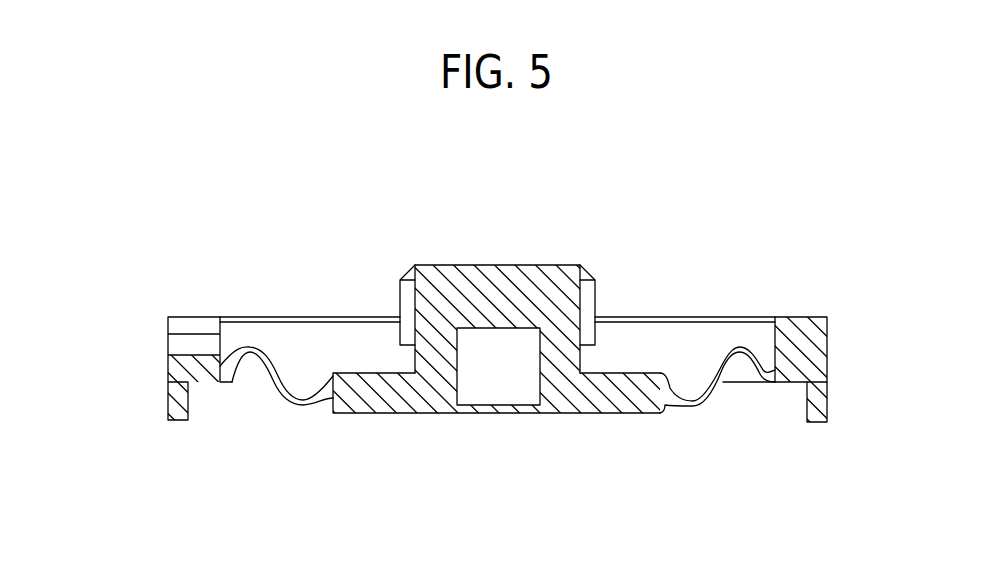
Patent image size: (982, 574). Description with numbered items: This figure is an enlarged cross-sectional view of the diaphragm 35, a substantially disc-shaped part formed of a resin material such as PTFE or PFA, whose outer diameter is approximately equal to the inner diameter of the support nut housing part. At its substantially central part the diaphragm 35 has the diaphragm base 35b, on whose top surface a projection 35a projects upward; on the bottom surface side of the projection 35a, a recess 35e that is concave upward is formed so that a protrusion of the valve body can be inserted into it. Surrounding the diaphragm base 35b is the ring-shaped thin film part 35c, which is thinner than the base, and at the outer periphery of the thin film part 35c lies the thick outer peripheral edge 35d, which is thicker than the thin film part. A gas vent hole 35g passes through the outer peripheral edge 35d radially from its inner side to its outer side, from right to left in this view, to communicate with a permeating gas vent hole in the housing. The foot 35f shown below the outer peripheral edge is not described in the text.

The diaphragm 35 is at (810, 312).
The projection 35a is at (592, 298).
The diaphragm base 35b is at (573, 403).
The thin film part 35c is at (697, 405).
The outer peripheral edge 35d is at (817, 352).
The recess 35e is at (495, 378).
The flange foot 35f is at (818, 403).
The gas vent hole 35g is at (188, 334).